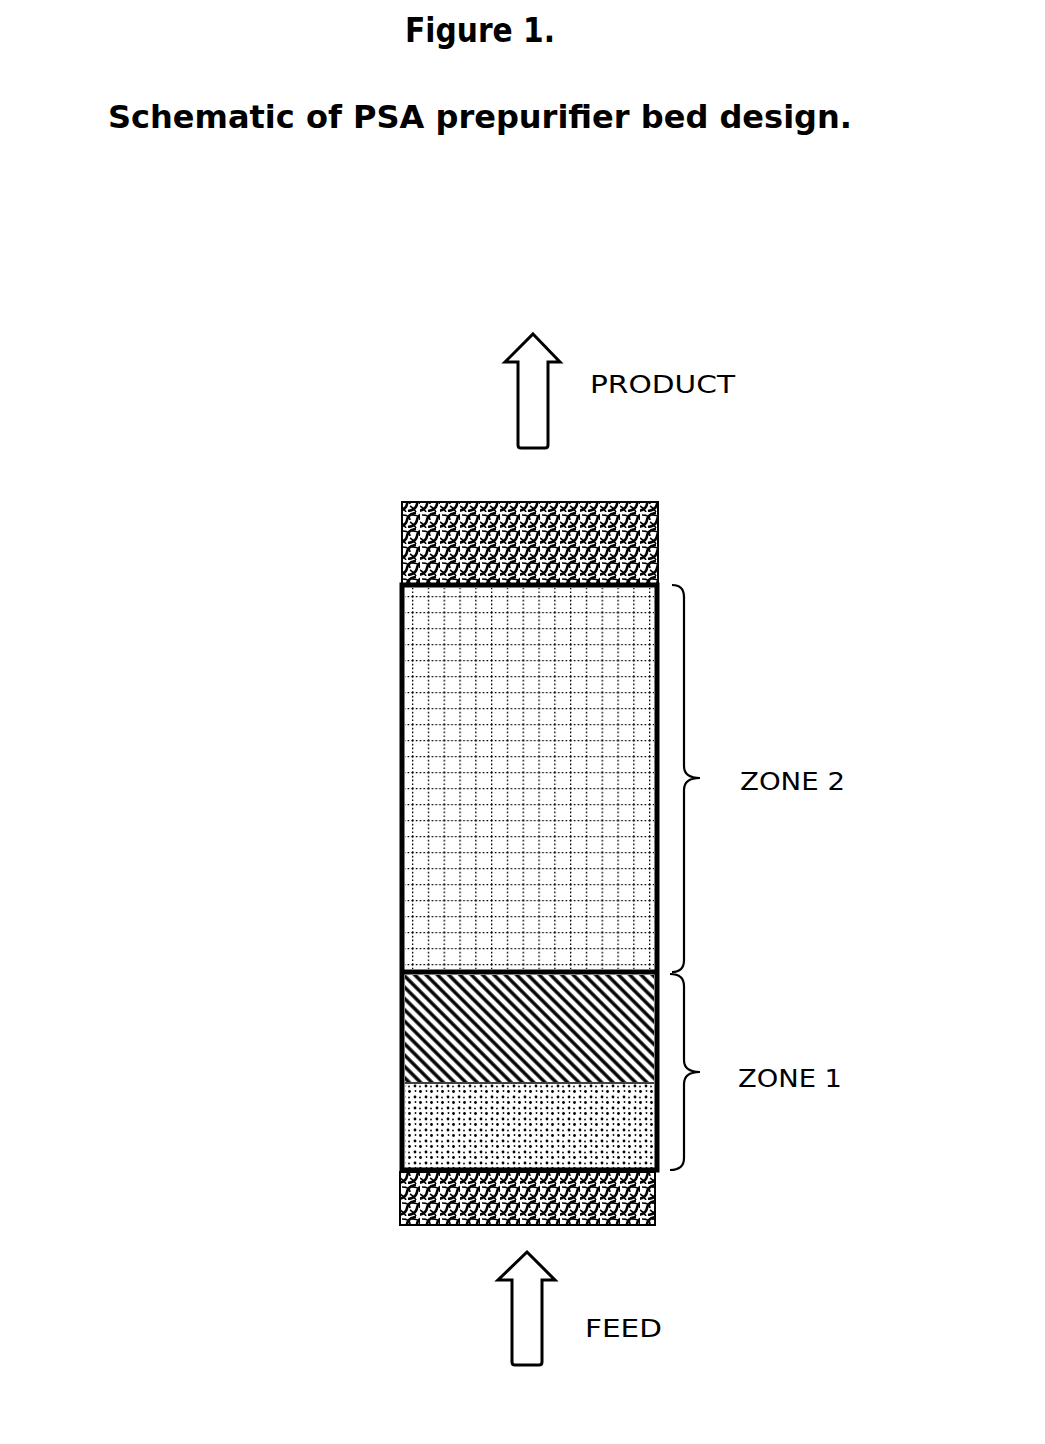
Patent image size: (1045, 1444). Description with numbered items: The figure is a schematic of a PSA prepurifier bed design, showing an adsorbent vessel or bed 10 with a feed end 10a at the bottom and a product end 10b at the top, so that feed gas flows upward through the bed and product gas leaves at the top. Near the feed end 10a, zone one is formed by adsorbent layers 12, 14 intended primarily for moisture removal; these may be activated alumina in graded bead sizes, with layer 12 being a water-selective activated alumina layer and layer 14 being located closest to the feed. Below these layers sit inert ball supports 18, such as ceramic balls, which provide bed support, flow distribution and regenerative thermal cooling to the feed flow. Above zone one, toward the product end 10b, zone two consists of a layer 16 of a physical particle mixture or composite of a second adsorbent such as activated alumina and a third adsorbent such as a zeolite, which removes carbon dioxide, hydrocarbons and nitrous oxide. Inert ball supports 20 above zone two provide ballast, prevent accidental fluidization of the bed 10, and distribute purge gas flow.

The adsorbent vessel or bed 10 is at (676, 641).
The feed end 10a is at (493, 1225).
The product end 10b is at (524, 501).
The activated alumina layer 12 is at (428, 1001).
The adsorbent layer 14 is at (428, 1140).
The layer of physical particle mixture or composite 16 is at (432, 722).
The inert ball supports 18 is at (425, 1197).
The inert ball supports 20 is at (430, 527).